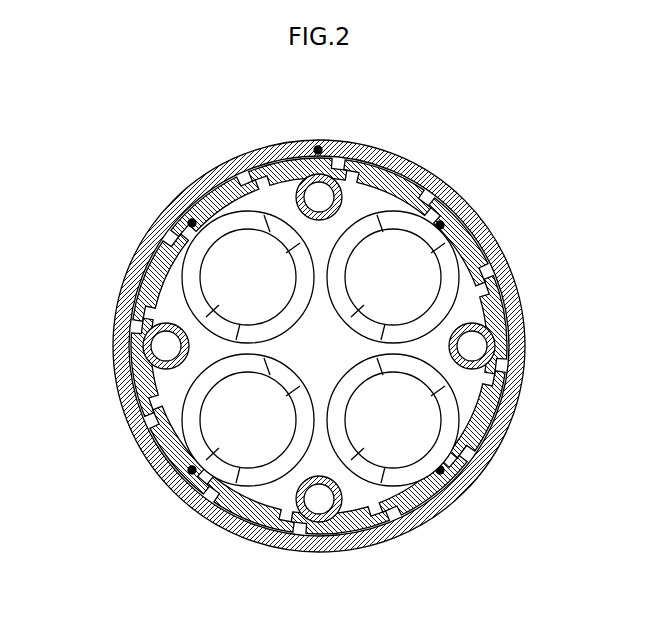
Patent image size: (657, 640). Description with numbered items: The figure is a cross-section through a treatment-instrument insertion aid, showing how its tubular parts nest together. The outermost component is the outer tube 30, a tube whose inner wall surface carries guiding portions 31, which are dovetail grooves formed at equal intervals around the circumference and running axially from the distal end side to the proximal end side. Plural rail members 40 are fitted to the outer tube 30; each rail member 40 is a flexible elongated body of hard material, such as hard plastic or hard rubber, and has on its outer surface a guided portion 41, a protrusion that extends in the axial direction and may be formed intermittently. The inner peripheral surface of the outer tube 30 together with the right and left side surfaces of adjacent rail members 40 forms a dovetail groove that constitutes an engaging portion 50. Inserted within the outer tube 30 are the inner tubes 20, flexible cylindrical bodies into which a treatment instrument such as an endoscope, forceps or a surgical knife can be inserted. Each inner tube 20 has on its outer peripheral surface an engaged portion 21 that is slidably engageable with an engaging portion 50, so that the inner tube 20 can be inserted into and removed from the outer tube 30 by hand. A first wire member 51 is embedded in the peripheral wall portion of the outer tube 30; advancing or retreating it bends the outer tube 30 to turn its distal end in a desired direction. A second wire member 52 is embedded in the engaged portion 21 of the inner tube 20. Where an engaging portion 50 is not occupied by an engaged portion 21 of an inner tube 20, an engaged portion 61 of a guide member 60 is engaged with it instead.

The inner tube 20 is at (527, 363).
The engaged portion 21 is at (432, 528).
The outer tube 30 is at (301, 311).
The guiding portion 31 is at (396, 158).
The rail member 40 is at (133, 266).
The guided portion 41 is at (132, 290).
The engaging portion 50 is at (304, 292).
The first wire member 51 is at (318, 148).
The second wire member 52 is at (458, 216).
The guide member 60 is at (320, 274).
The engaged portion 61 is at (270, 140).